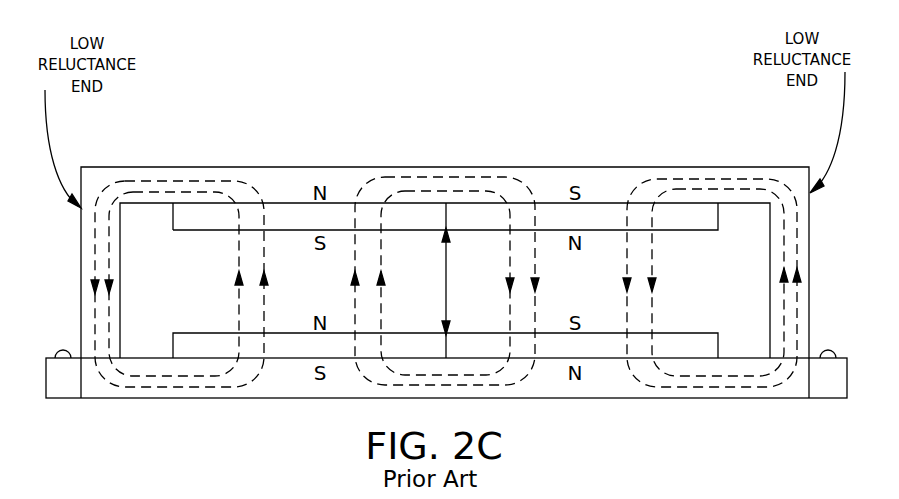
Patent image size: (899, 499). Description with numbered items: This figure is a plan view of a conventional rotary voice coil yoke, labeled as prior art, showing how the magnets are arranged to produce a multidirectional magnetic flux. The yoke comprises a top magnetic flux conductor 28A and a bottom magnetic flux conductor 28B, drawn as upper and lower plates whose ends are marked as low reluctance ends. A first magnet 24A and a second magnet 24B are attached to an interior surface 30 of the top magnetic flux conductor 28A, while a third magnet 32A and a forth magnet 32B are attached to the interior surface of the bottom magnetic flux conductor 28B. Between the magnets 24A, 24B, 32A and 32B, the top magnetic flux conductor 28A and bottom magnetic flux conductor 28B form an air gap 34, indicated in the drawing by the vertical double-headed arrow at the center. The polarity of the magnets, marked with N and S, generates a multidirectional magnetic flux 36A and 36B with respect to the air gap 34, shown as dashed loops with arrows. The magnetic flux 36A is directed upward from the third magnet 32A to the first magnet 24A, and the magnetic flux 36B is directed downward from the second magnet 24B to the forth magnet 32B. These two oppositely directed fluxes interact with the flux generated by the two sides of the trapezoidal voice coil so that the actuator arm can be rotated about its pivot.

The top magnetic flux conductor 28A is at (785, 166).
The bottom magnetic flux conductor 28B is at (792, 390).
The interior surface 30 is at (139, 208).
The first magnet 24A is at (187, 226).
The second magnet 24B is at (688, 224).
The third magnet 32A is at (194, 341).
The forth magnet 32B is at (695, 341).
The air gap 34 is at (445, 280).
The magnetic flux 36A is at (353, 290).
The magnetic flux 36B is at (625, 276).